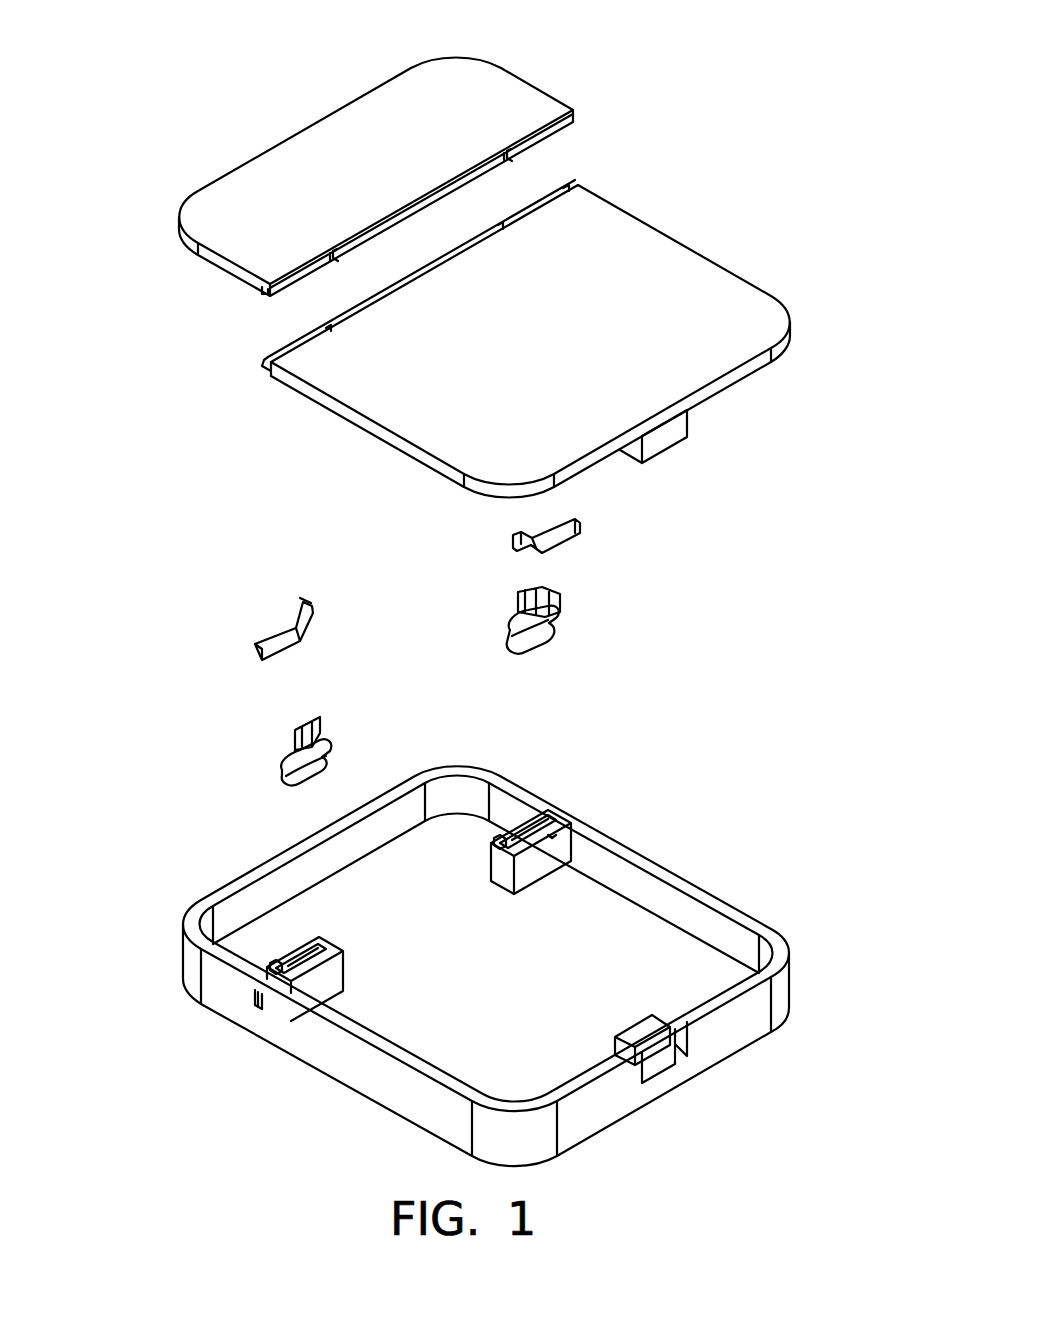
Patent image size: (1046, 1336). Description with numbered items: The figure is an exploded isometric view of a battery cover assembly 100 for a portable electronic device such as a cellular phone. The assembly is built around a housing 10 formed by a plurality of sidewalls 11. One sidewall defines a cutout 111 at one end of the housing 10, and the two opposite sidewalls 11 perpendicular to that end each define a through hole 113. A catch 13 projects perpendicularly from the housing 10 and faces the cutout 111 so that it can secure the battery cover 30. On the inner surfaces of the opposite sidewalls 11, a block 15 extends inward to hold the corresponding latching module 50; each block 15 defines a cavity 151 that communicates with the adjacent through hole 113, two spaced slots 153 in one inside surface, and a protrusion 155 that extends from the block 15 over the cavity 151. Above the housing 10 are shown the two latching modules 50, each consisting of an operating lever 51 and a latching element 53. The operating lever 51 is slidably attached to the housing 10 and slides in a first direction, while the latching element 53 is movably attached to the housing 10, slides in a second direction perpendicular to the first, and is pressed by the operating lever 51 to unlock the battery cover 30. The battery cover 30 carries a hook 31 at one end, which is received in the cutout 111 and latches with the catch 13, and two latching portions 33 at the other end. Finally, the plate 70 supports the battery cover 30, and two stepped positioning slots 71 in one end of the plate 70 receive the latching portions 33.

The battery cover assembly 100 is at (160, 60).
The plate 70 is at (490, 88).
The stepped positioning slots 71 is at (258, 286).
The battery cover 30 is at (630, 237).
The hook 31 is at (667, 437).
The latching portions 33 is at (263, 362).
The latching modules 50 is at (143, 617).
The operating lever 51 is at (262, 640).
The latching element 53 is at (293, 735).
The housing 10 is at (193, 872).
The sidewalls 11 is at (752, 1025).
The catch 13 is at (660, 1037).
The cutout 111 is at (655, 1062).
The through holes 113 is at (552, 832).
The block 15 is at (567, 838).
The cavity 151 is at (540, 832).
The slots 153 is at (553, 840).
The protrusion 155 is at (507, 825).